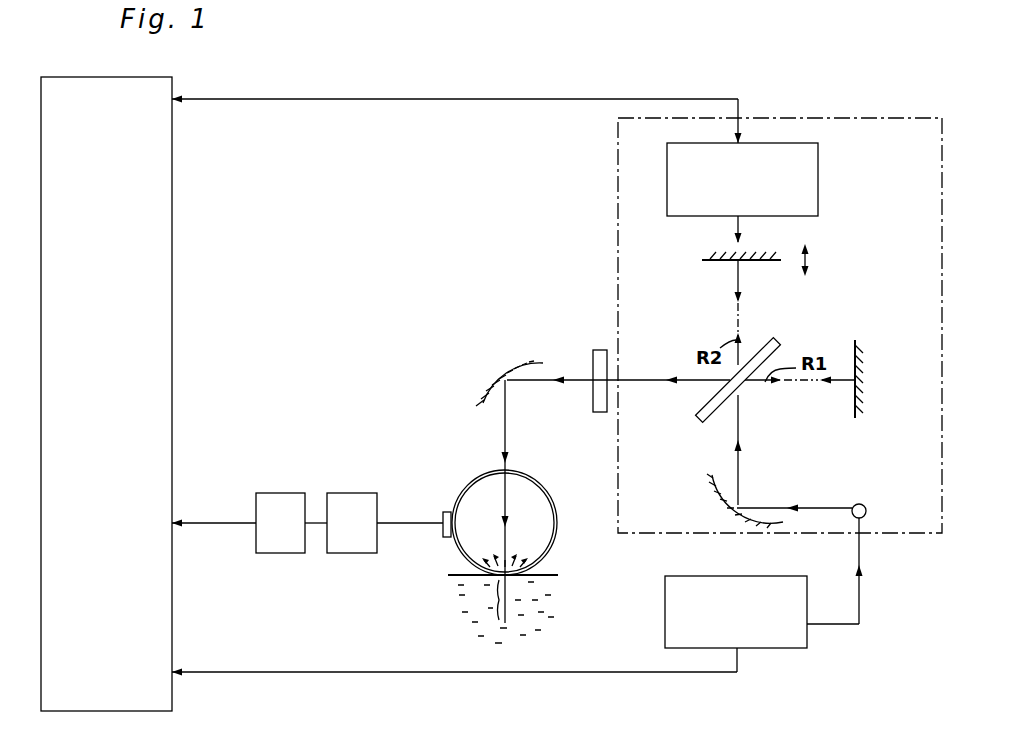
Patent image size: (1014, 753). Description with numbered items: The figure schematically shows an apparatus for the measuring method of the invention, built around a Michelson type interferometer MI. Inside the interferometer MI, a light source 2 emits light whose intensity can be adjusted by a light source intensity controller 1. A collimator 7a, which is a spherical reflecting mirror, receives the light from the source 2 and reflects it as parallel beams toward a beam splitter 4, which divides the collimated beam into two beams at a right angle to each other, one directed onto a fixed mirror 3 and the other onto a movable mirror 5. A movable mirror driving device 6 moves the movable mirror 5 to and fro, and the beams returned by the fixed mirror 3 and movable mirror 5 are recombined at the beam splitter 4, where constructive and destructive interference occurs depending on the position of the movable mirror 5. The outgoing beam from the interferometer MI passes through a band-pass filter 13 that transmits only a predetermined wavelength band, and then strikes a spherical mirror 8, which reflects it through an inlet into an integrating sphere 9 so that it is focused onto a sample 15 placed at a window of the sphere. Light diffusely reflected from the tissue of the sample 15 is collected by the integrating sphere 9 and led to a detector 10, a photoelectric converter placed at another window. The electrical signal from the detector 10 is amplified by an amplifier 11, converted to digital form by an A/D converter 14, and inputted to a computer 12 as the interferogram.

The light source intensity controller 1 is at (807, 600).
The light source 2 is at (865, 504).
The fixed mirror 3 is at (862, 352).
The beam splitter 4 is at (742, 388).
The movable mirror 5 is at (762, 254).
The movable mirror driving device 6 is at (818, 165).
The collimator 7a is at (717, 497).
The spherical mirror 8 is at (505, 365).
The integrating sphere 9 is at (523, 472).
The detector 10 is at (443, 516).
The amplifier 11 is at (354, 493).
The computer 12 is at (155, 403).
The band-pass filter 13 is at (593, 400).
The A/D converter 14 is at (274, 493).
The sample 15 is at (540, 577).
The Michelson type interferometer MI is at (942, 152).